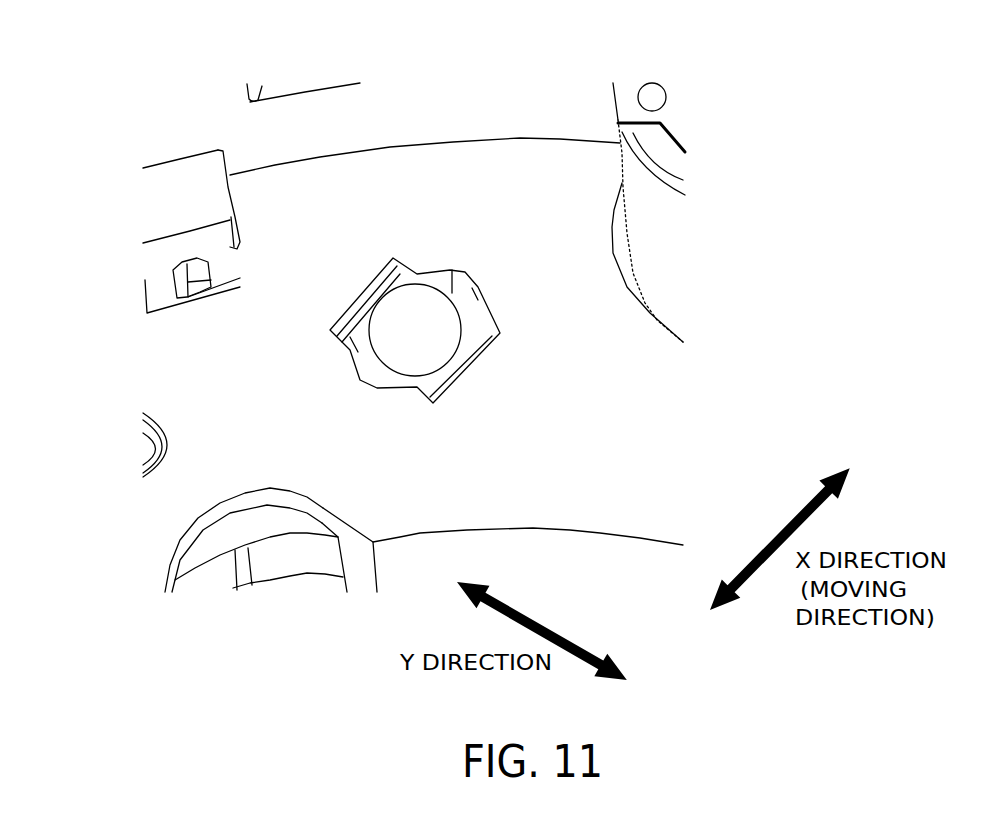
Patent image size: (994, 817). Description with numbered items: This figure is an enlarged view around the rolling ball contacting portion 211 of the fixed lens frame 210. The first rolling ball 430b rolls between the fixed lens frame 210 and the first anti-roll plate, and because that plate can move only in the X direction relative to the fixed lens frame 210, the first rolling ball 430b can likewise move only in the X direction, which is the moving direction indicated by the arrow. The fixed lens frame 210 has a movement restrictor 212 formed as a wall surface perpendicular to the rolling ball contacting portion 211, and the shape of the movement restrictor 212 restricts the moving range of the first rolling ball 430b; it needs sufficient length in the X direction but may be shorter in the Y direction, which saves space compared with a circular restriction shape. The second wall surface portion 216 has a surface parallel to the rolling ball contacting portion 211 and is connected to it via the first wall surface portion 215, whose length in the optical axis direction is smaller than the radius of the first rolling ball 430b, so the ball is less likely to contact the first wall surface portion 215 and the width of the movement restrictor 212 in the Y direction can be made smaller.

The fixed lens frame 210 is at (717, 371).
The rolling ball contacting portion 211 is at (245, 339).
The movement restrictor 212 is at (578, 180).
The first wall surface portion 215 is at (424, 463).
The second wall surface portion 216 is at (191, 236).
The first rolling ball 430b is at (328, 239).